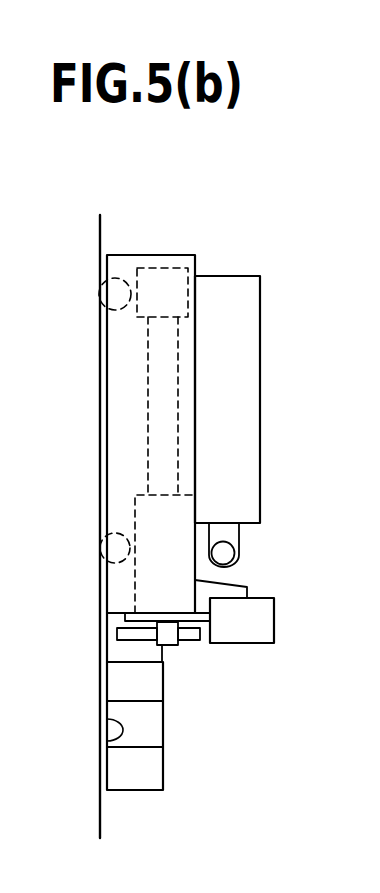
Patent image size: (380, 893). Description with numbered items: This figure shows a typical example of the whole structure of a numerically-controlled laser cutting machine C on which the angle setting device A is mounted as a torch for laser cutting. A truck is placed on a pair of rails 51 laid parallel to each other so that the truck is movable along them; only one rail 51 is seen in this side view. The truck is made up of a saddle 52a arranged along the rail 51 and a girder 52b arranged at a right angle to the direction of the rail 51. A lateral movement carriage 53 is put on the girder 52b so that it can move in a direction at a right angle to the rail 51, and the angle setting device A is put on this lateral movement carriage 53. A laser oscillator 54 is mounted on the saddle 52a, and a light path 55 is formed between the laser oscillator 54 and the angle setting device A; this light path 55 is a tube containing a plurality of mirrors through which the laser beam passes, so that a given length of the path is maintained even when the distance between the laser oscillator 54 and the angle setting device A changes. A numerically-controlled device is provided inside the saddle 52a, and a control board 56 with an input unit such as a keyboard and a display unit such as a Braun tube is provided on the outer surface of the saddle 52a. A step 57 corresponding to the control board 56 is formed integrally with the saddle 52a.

The rail 51 is at (100, 232).
The saddle 52a is at (125, 418).
The girder 52b is at (151, 527).
The lateral movement carriage 53 is at (125, 613).
The laser oscillator 54 is at (248, 382).
The light path 55 is at (237, 560).
The control board 56 is at (248, 633).
The step 57 is at (108, 739).
The numerically-controlled laser cutting machine C is at (223, 257).
The angle setting device A is at (131, 641).